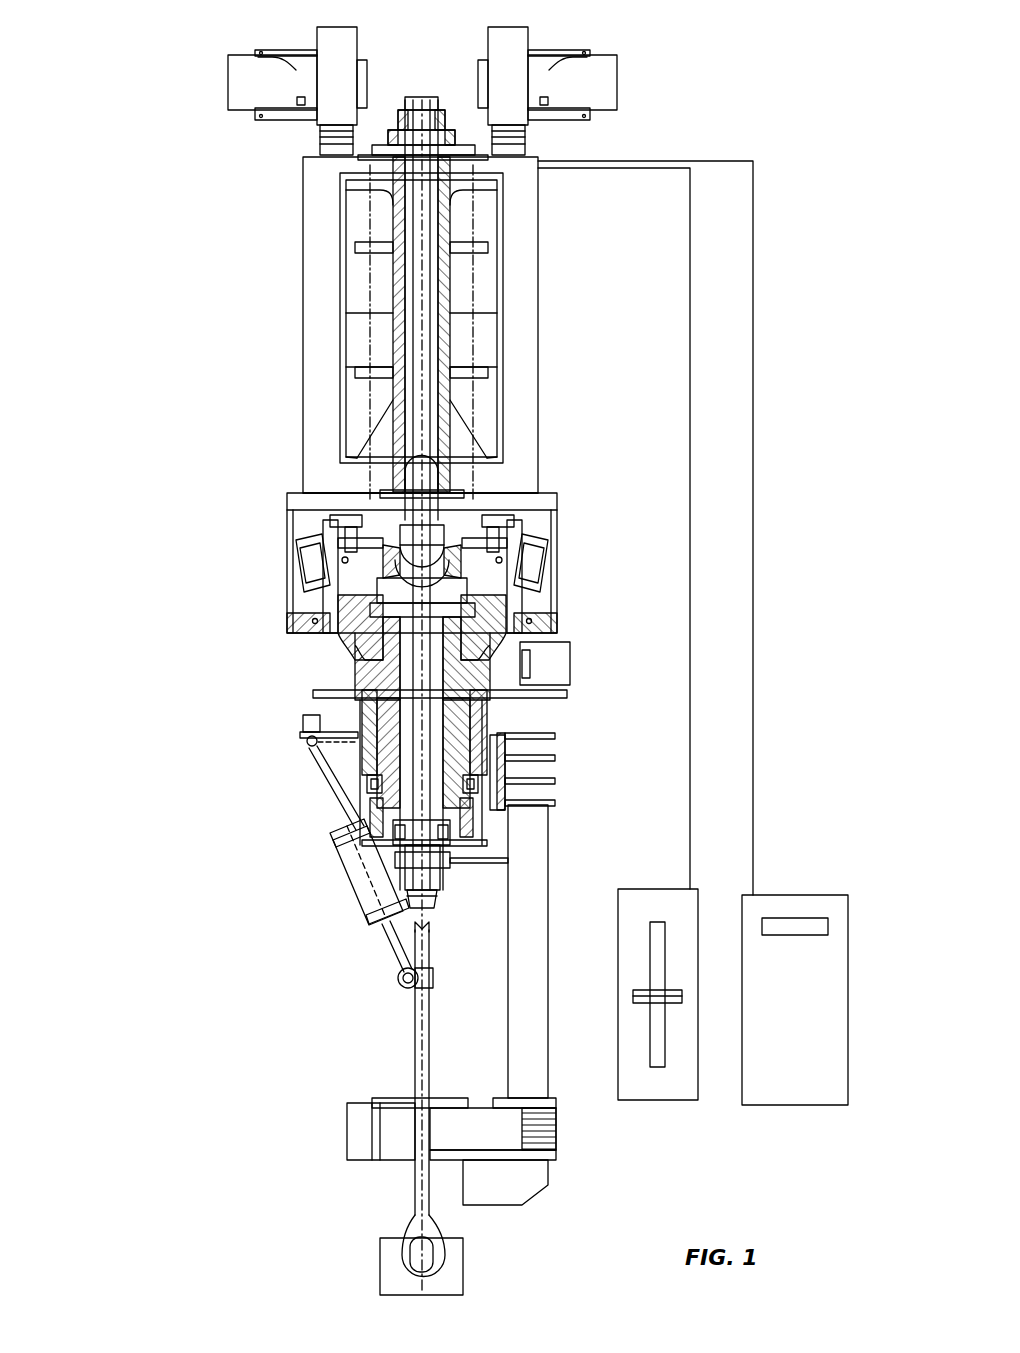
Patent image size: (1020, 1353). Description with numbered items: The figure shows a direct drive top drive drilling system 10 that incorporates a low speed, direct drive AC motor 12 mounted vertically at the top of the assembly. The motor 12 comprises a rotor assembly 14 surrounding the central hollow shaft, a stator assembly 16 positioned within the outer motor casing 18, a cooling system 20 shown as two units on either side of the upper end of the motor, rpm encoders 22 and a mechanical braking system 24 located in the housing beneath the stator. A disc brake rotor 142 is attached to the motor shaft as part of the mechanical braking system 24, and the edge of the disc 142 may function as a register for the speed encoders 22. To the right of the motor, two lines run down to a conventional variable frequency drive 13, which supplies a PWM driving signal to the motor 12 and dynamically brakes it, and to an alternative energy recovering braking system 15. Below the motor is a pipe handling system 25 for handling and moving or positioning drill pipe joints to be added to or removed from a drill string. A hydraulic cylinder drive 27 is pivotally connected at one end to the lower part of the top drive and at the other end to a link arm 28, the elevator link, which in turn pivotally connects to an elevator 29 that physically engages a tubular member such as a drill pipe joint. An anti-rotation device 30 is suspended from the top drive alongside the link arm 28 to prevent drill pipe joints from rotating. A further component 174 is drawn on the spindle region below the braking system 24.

The top drive drilling system 10 is at (168, 33).
The direct drive AC motor 12 is at (527, 257).
The variable frequency drive 13 is at (810, 1027).
The rotor assembly 14 is at (470, 342).
The energy recovering braking system 15 is at (655, 888).
The stator assembly 16 is at (360, 340).
The outer motor casing 18 is at (527, 370).
The cooling system 20 is at (228, 88).
The rpm encoders 22 is at (325, 560).
The mechanical braking system 24 is at (540, 560).
The pipe handling system 25 is at (325, 790).
The hydraulic cylinder drive 27 is at (348, 880).
The link arm 28 is at (412, 1032).
The elevator 29 is at (378, 1270).
The anti-rotation device 30 is at (552, 845).
The disc brake rotor 142 is at (462, 525).
The spindle sleeve 174 is at (440, 652).